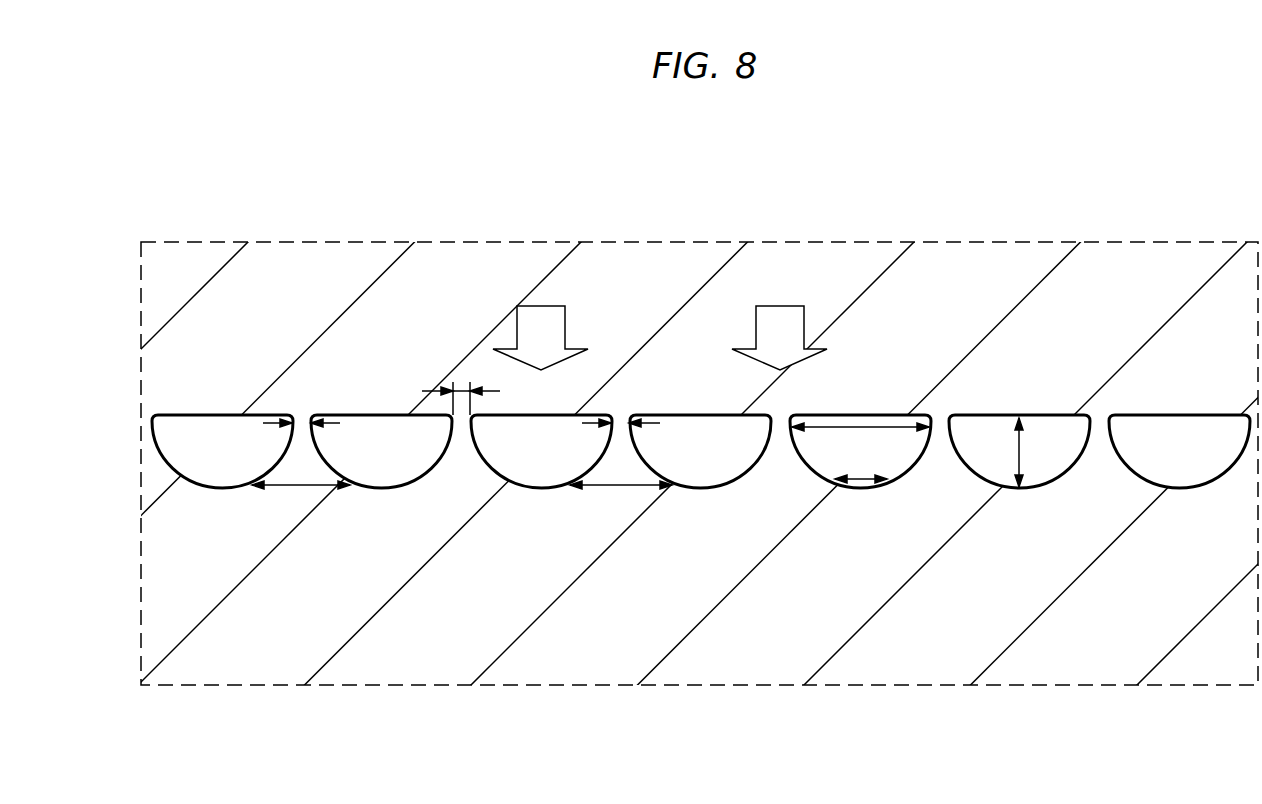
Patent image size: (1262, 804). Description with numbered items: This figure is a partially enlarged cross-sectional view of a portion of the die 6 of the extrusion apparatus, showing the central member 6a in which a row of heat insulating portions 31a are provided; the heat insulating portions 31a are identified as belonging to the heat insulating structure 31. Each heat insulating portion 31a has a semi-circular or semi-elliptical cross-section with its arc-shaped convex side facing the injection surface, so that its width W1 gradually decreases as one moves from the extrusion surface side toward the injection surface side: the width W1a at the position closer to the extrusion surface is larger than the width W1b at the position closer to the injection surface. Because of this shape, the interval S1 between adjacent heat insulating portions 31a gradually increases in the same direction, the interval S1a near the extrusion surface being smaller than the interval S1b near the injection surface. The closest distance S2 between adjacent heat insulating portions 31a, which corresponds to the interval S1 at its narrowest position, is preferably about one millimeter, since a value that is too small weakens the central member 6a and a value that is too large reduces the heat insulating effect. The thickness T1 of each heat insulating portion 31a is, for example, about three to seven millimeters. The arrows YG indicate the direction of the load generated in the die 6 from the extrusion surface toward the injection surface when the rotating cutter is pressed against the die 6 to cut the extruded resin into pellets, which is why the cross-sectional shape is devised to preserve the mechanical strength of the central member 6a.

The die 6 is at (631, 402).
The central member 6a is at (1100, 653).
The bump 31 is at (701, 442).
The heat insulating portion 31a is at (218, 428).
The interval S1 is at (465, 478).
The interval at the position closer to the extrusion surface S1a is at (305, 423).
The interval at the position closer to the injection surface S1b is at (293, 485).
The closest distance S2 is at (461, 387).
The arrows YG is at (542, 320).
The width W1 is at (860, 459).
The width at the position closer to the extrusion surface W1a is at (867, 420).
The width at the position closer to the injection surface W1b is at (859, 490).
The thickness T1 is at (1024, 453).